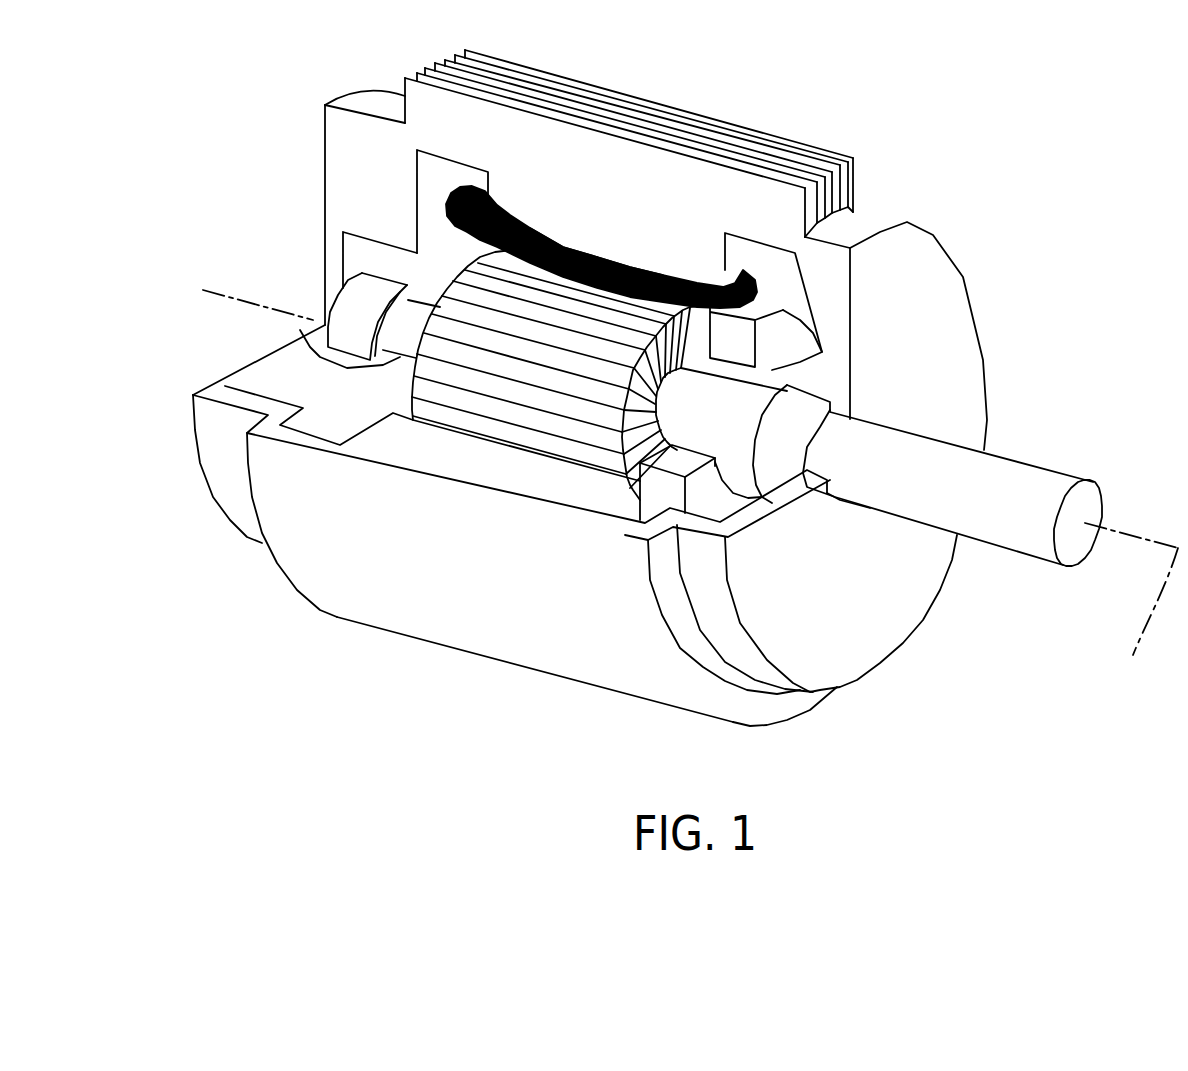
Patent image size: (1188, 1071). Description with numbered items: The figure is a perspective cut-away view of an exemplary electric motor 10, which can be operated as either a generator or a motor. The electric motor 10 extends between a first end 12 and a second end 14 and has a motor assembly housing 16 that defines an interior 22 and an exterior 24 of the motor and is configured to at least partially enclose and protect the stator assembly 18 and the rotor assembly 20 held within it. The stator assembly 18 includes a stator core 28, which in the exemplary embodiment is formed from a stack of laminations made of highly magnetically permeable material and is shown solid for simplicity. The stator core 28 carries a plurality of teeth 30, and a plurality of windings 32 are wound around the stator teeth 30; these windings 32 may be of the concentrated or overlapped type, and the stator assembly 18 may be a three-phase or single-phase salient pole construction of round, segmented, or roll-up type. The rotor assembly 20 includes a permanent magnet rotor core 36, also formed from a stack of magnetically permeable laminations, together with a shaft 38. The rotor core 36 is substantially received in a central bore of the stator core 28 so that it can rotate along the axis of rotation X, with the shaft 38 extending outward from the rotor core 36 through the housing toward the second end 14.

The electric motor 10 is at (957, 128).
The first end 12 is at (236, 97).
The second end 14 is at (992, 242).
The motor assembly housing 16 is at (818, 147).
The stator assembly 18 is at (525, 228).
The rotor assembly 20 is at (528, 393).
The interior 22 is at (369, 200).
The exterior 24 is at (351, 90).
The stator core 28 is at (567, 253).
The teeth 30 is at (730, 240).
The windings 32 is at (640, 263).
The rotor core 36 is at (633, 442).
The shaft 38 is at (1058, 463).